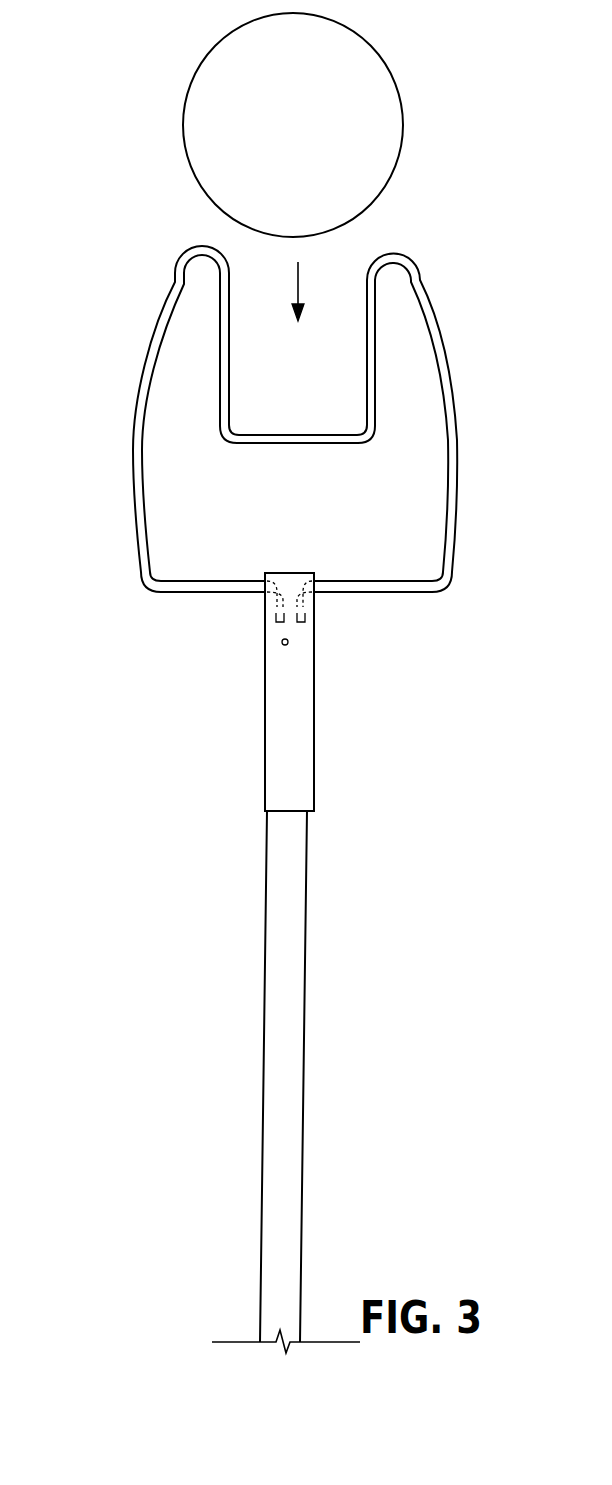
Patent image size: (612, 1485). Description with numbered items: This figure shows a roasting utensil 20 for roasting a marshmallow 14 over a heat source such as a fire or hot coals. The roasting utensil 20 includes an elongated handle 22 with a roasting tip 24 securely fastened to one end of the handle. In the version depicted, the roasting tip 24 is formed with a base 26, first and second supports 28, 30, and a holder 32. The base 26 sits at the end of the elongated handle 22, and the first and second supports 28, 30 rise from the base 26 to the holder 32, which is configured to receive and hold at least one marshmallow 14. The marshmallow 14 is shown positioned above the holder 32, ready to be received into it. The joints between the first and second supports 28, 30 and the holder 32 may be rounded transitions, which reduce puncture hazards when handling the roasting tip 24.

The marshmallow 14 is at (181, 123).
The roasting utensil 20 is at (268, 799).
The elongated handle 22 is at (265, 1043).
The roasting tip 24 is at (268, 453).
The base 26 is at (232, 593).
The first support 28 is at (152, 347).
The second support 30 is at (450, 367).
The holder 32 is at (367, 313).